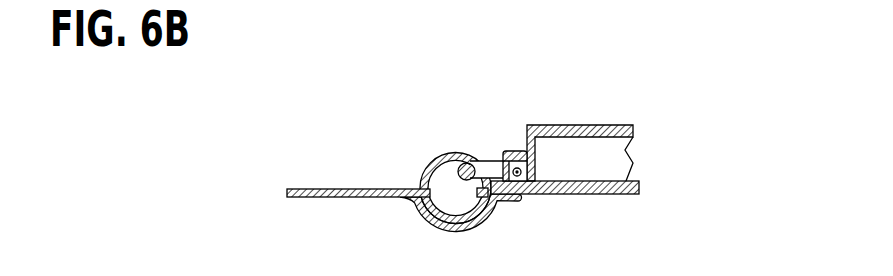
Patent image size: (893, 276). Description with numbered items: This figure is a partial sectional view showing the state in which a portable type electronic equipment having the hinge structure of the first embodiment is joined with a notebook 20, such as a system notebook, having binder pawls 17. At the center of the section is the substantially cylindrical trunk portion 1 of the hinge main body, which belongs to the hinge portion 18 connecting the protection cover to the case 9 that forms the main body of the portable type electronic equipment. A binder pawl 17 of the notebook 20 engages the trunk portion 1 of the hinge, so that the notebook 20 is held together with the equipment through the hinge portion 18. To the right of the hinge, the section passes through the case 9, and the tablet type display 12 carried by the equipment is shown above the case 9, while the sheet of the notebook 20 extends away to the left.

The trunk portion 1 is at (418, 171).
The case 9 is at (612, 182).
The tablet type display 12 is at (587, 124).
The binder pawls 17 is at (459, 166).
The hinge portion 18 is at (497, 148).
The notebook 20 is at (323, 181).